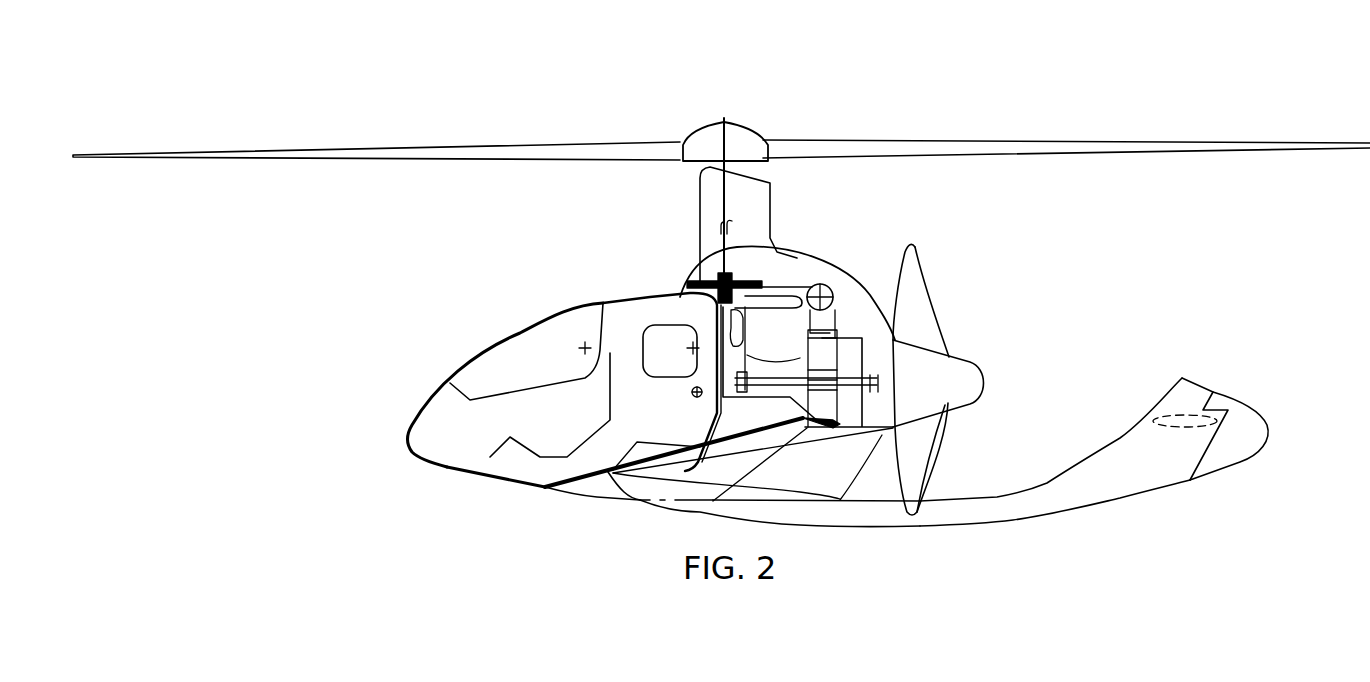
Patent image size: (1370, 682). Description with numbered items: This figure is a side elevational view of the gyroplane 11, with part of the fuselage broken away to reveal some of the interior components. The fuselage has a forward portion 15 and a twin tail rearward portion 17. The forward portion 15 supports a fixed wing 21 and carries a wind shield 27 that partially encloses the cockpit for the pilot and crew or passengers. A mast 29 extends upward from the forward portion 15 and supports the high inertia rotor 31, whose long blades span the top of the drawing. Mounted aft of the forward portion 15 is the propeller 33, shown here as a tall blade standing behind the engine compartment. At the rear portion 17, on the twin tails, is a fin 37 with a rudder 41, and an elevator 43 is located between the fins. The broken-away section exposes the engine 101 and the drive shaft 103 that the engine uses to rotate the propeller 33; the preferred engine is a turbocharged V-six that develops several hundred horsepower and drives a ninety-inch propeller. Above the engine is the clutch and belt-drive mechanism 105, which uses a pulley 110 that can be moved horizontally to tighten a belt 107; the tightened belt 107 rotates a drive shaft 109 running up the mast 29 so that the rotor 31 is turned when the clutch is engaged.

The helicopter 11 is at (762, 83).
The forward portion 15 is at (428, 430).
The twin tail rearward portion 17 is at (1017, 518).
The fixed wing 21 is at (602, 493).
The wind shield 27 is at (527, 352).
The rotor mast fairing 29 is at (713, 197).
The high inertia rotor 31 is at (1033, 147).
The propeller 33 is at (915, 275).
The fin 37 is at (1187, 395).
The rudder 41 is at (1250, 442).
The elevator 43 is at (1167, 417).
The engine 101 is at (818, 290).
The drive shaft 103 is at (877, 377).
The clutch and belt-drive mechanism 105 is at (673, 268).
The belt 107 is at (787, 315).
The drive shaft 109 is at (720, 238).
The pulley 110 is at (740, 285).